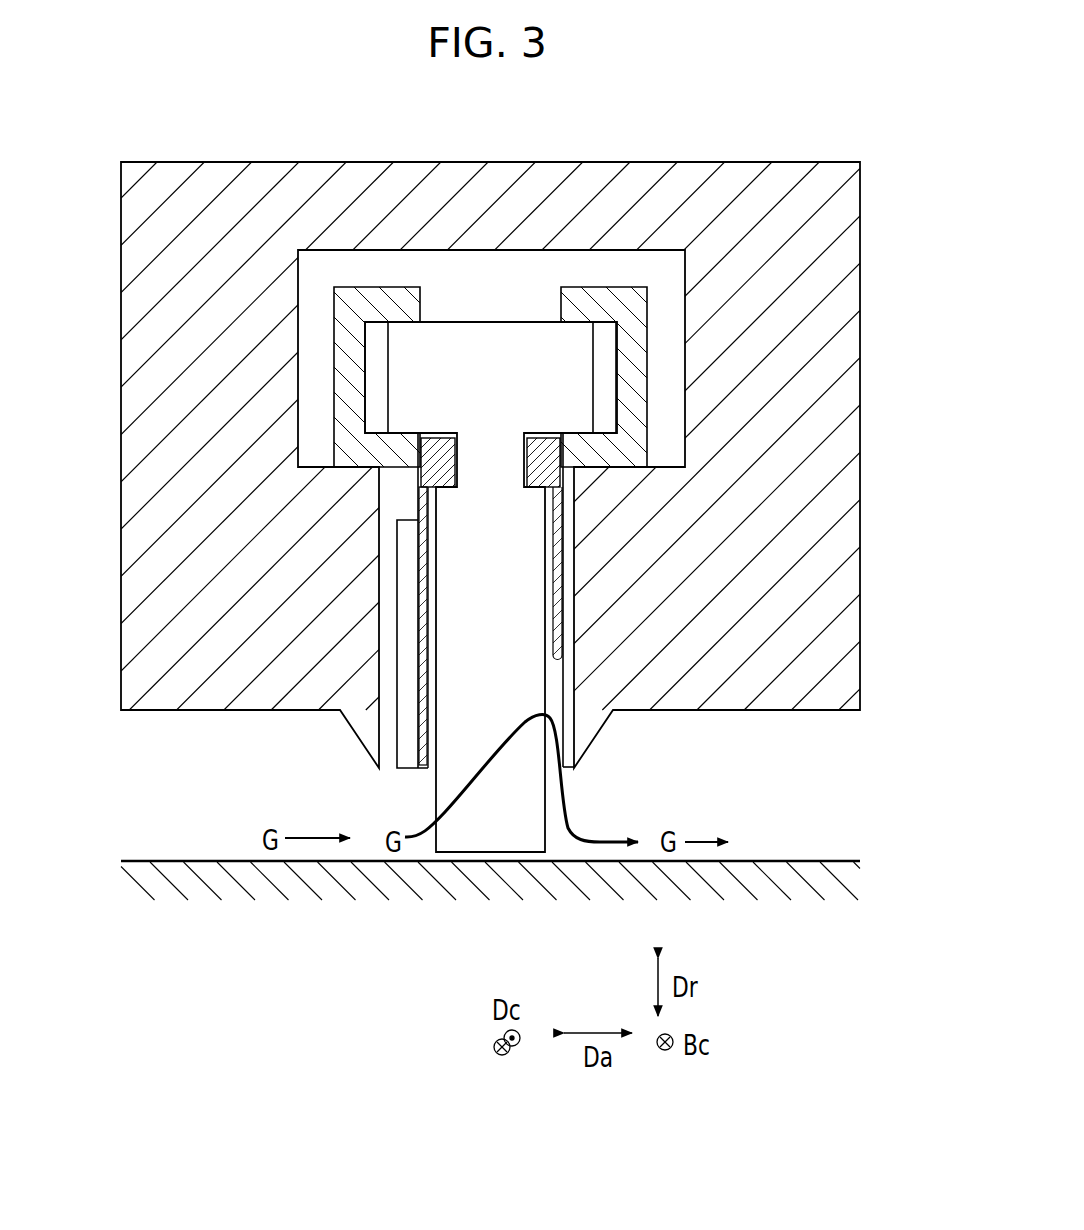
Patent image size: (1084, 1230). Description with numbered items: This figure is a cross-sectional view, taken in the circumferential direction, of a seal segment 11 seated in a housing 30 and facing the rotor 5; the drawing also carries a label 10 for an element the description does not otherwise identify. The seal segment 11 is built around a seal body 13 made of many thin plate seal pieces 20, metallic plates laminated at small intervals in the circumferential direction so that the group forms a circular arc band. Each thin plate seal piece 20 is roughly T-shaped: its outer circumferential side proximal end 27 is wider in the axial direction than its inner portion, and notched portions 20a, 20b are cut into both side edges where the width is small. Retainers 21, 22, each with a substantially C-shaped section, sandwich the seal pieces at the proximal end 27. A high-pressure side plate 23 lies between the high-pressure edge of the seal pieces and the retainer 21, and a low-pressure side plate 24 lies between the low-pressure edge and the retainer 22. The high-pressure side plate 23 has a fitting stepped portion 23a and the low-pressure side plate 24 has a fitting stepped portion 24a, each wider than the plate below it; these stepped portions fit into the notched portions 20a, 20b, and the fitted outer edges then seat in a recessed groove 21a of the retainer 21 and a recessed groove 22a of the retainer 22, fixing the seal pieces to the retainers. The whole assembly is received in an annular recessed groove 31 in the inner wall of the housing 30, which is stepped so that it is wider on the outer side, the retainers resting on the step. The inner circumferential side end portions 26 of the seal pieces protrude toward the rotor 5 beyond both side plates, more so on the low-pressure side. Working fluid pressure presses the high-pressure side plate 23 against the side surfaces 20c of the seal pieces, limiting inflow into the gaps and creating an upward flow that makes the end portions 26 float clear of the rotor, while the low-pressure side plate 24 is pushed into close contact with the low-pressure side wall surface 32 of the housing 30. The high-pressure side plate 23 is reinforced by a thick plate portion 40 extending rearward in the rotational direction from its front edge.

The rotor 5 is at (808, 868).
The sealing device 10 is at (498, 534).
The seal segment 11 is at (578, 282).
The seal body 13 is at (447, 312).
The thin plate seal piece 20 is at (455, 665).
The notched portion 20a is at (453, 475).
The notched portion 20b is at (531, 487).
The side surface 20c is at (437, 710).
The retainer 21 is at (345, 353).
The recessed groove 21a is at (365, 383).
The retainer 22 is at (628, 362).
The recessed groove 22a is at (617, 380).
The high-pressure side plate 23 is at (385, 615).
The fitting stepped portion 23a is at (448, 480).
The low-pressure side plate 24 is at (572, 580).
The fitting stepped portion 24a is at (540, 470).
The inner circumferential side end portion 26 is at (490, 832).
The outer circumferential side proximal end 27 is at (487, 328).
The housing 30 is at (838, 258).
The annular recessed groove 31 is at (521, 252).
The low-pressure side wall surface 32 is at (566, 656).
The thick plate portion 40 is at (393, 763).